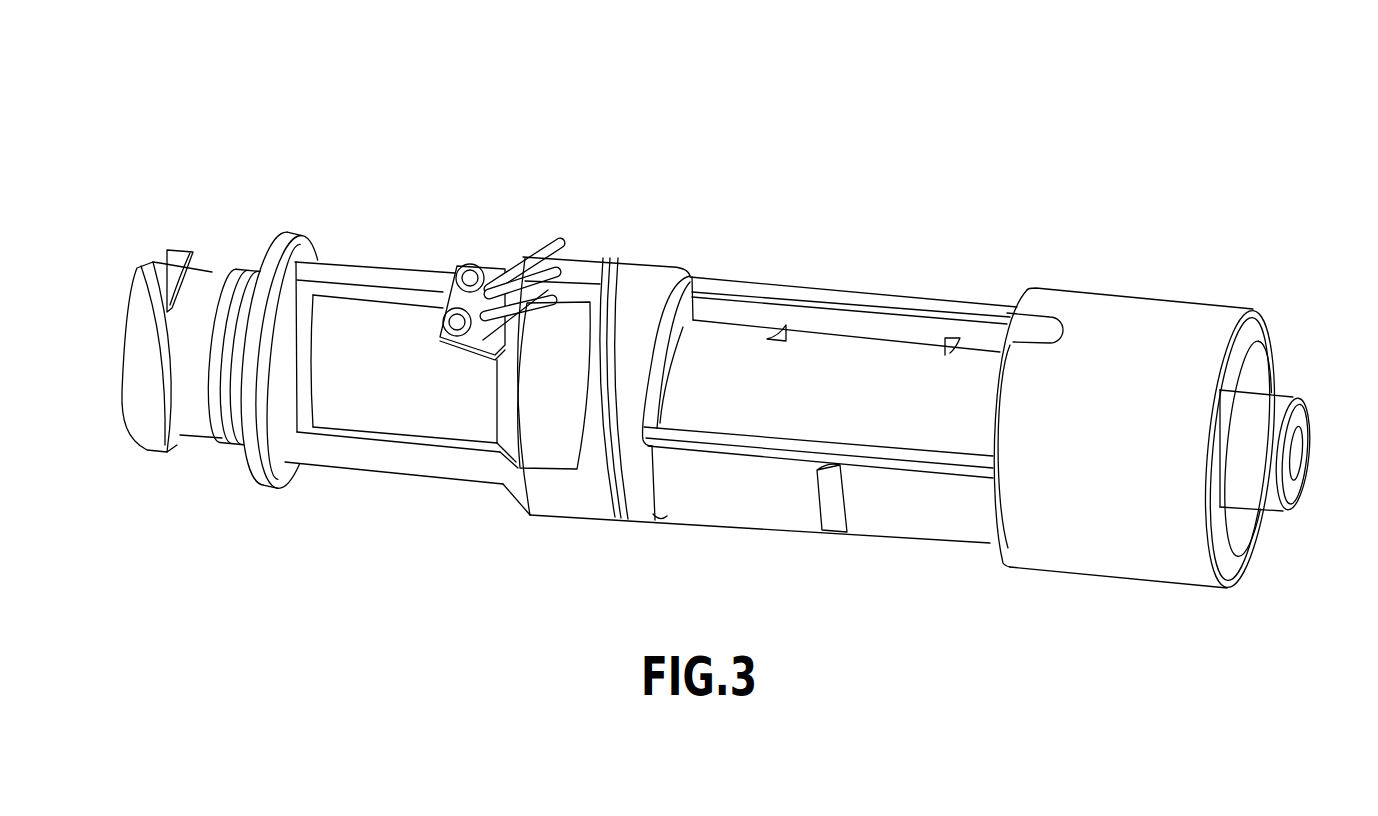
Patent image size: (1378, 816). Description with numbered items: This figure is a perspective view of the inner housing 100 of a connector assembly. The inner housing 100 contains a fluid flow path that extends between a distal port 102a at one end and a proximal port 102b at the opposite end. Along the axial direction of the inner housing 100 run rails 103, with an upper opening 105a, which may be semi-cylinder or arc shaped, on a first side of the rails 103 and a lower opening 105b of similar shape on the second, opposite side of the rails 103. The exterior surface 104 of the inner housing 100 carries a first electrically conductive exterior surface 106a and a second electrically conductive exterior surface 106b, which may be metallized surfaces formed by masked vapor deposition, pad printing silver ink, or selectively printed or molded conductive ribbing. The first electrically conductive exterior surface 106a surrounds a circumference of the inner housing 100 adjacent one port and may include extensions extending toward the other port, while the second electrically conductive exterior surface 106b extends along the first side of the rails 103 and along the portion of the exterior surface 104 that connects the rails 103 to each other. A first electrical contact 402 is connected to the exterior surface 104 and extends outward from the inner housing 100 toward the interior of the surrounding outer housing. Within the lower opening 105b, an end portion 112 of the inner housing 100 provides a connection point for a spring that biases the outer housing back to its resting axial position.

The inner housing 100 is at (1230, 82).
The distal port 102a is at (1298, 495).
The proximal port 102b is at (124, 292).
The rails 103 is at (907, 300).
The exterior surface 104 is at (373, 458).
The upper opening 105a is at (727, 258).
The lower opening 105b is at (682, 552).
The first electrically conductive exterior surface 106a is at (288, 425).
The second electrically conductive exterior surface 106b is at (977, 307).
The end portion 112 is at (973, 540).
The first electrical contact 402 is at (514, 268).